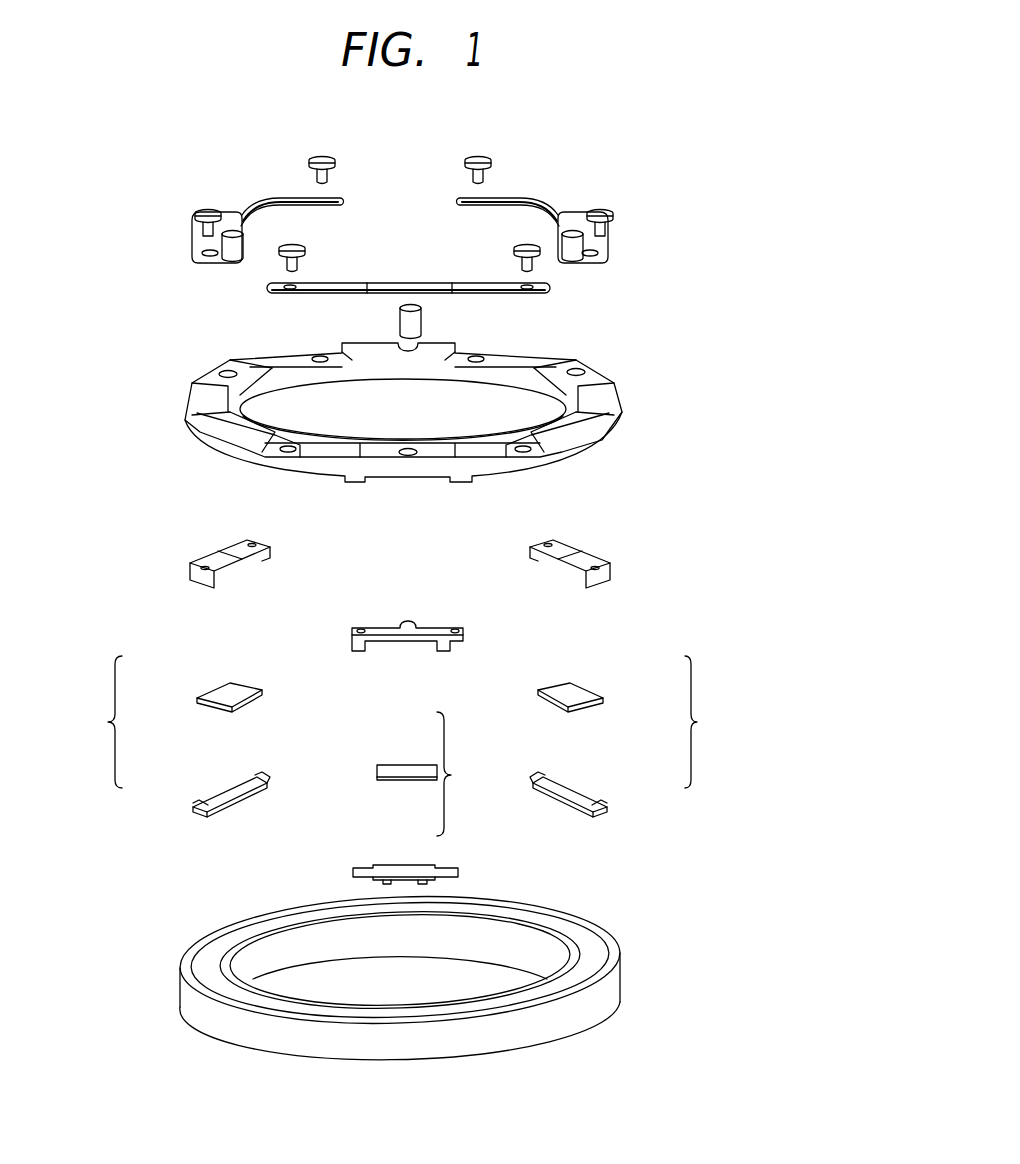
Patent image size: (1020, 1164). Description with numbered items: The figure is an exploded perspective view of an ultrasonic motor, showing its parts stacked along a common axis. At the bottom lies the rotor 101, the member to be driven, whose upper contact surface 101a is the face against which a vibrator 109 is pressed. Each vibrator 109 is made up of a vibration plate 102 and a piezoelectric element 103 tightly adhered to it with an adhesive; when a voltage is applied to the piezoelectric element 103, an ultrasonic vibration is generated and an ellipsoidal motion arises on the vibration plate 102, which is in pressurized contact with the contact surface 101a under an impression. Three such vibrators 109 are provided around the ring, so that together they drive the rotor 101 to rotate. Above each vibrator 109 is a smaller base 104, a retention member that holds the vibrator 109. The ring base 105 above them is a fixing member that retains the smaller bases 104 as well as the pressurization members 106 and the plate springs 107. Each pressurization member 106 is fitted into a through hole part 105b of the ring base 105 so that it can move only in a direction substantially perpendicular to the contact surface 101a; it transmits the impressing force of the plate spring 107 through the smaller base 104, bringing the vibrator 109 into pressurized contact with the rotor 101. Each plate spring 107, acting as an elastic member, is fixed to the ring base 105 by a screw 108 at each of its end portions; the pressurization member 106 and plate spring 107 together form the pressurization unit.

The rotor 101 is at (583, 1019).
The contact surface 101a is at (584, 972).
The vibration plate 102 is at (215, 790).
The piezoelectric element 103 is at (220, 690).
The smaller base 104 is at (215, 557).
The ring base 105 is at (600, 435).
The through hole part 105b is at (225, 364).
The pressurization member 106 is at (232, 256).
The plate spring 107 is at (228, 205).
The screw 108 is at (322, 156).
The vibrator 109 is at (403, 746).